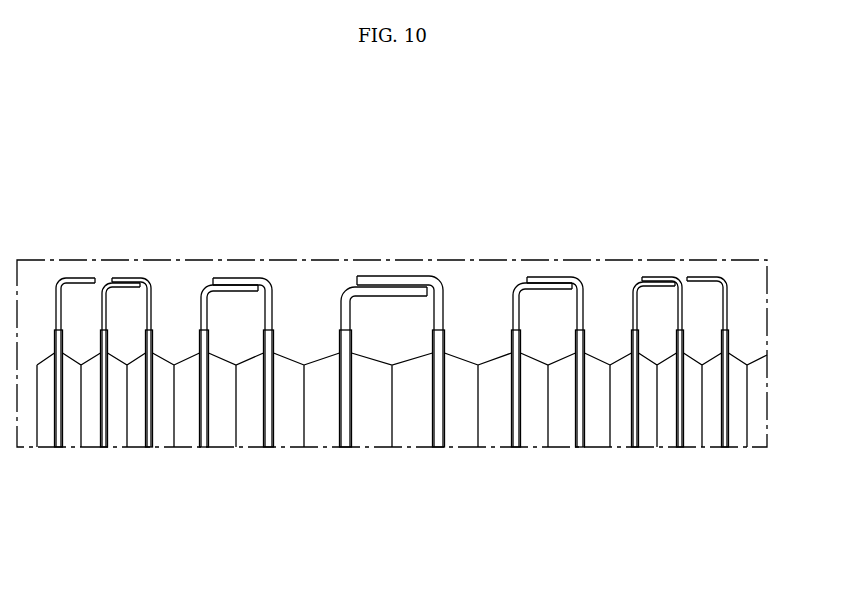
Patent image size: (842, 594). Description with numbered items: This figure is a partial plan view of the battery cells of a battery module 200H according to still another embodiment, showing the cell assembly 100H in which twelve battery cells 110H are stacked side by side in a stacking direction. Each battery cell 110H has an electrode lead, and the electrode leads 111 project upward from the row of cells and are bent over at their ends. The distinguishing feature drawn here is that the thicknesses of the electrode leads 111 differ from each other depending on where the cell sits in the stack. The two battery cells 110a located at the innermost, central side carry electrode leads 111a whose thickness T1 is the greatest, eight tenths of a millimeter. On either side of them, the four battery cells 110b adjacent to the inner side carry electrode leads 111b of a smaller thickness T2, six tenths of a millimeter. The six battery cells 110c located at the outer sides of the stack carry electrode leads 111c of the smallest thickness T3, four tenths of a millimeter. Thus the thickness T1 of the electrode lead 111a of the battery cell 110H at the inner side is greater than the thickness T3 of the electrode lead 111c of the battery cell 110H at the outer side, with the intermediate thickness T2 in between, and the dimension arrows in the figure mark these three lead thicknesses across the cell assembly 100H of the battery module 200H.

The battery module 200H is at (170, 102).
The cell assembly 100H is at (171, 278).
The electrode leads 111 is at (762, 212).
The electrode lead 111a is at (332, 285).
The electrode lead 111b is at (504, 285).
The electrode lead 111c is at (627, 285).
The battery cells 110H is at (702, 527).
The battery cell 110a is at (415, 432).
The battery cell 110b is at (252, 432).
The battery cell 110c is at (137, 432).
The thickness T1 is at (350, 315).
The thickness T2 is at (543, 315).
The thickness T3 is at (643, 312).